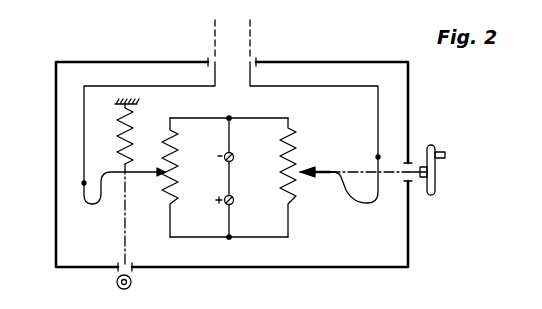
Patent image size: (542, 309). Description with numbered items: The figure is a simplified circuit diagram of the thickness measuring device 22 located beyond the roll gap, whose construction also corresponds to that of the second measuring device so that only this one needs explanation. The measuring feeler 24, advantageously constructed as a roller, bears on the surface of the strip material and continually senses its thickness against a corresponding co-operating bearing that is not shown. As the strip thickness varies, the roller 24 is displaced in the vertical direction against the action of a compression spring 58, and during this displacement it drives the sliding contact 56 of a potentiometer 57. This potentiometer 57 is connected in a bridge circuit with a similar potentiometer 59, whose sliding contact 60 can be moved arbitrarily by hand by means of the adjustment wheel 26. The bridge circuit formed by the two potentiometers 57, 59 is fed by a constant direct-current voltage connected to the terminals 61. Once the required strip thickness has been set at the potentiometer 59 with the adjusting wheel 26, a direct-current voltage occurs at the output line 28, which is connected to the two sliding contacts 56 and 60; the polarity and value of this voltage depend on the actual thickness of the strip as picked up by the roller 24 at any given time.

The thickness measuring device 22 is at (414, 252).
The measuring feeler 24 is at (131, 286).
The adjustment wheel 26 is at (437, 172).
The output line 28 is at (250, 46).
The sliding contact 56 is at (127, 175).
The potentiometer 57 is at (168, 130).
The compression spring 58 is at (125, 143).
The potentiometer 59 is at (289, 206).
The sliding contact 60 is at (337, 178).
The terminals 61 is at (234, 196).